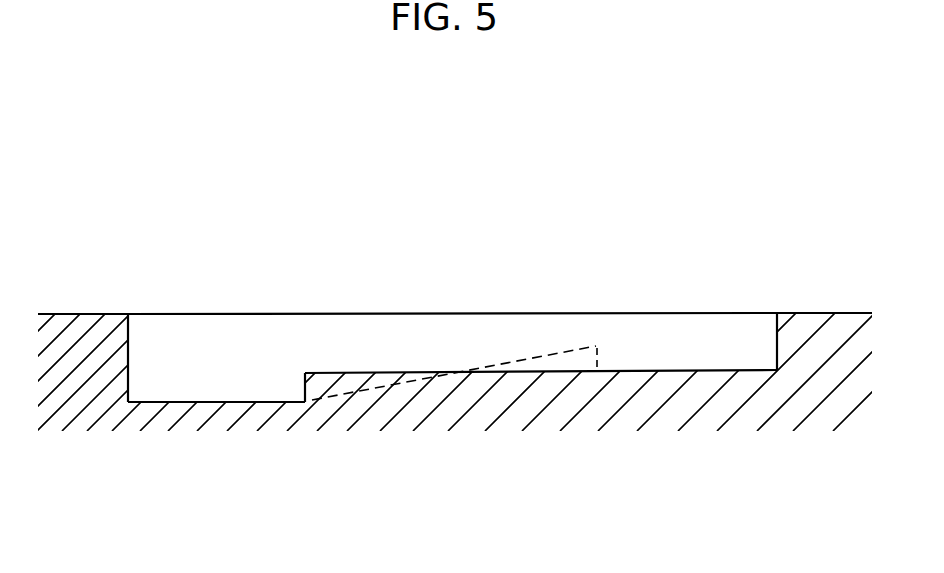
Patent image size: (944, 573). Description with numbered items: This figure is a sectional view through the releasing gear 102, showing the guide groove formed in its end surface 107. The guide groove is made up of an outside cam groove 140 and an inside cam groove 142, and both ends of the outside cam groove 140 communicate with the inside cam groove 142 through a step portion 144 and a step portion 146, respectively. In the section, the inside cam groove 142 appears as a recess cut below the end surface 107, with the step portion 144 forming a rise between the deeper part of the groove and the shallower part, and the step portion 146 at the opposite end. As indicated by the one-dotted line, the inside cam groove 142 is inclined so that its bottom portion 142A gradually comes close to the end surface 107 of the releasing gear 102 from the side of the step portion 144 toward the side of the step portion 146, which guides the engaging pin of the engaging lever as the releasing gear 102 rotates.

The releasing gear 102 is at (329, 298).
The end surface 107 is at (836, 313).
The outside cam groove 140 is at (777, 333).
The inside cam groove 142 is at (131, 364).
The bottom portion 142A is at (235, 402).
The step portion 144 is at (306, 381).
The step portion 146 is at (599, 351).